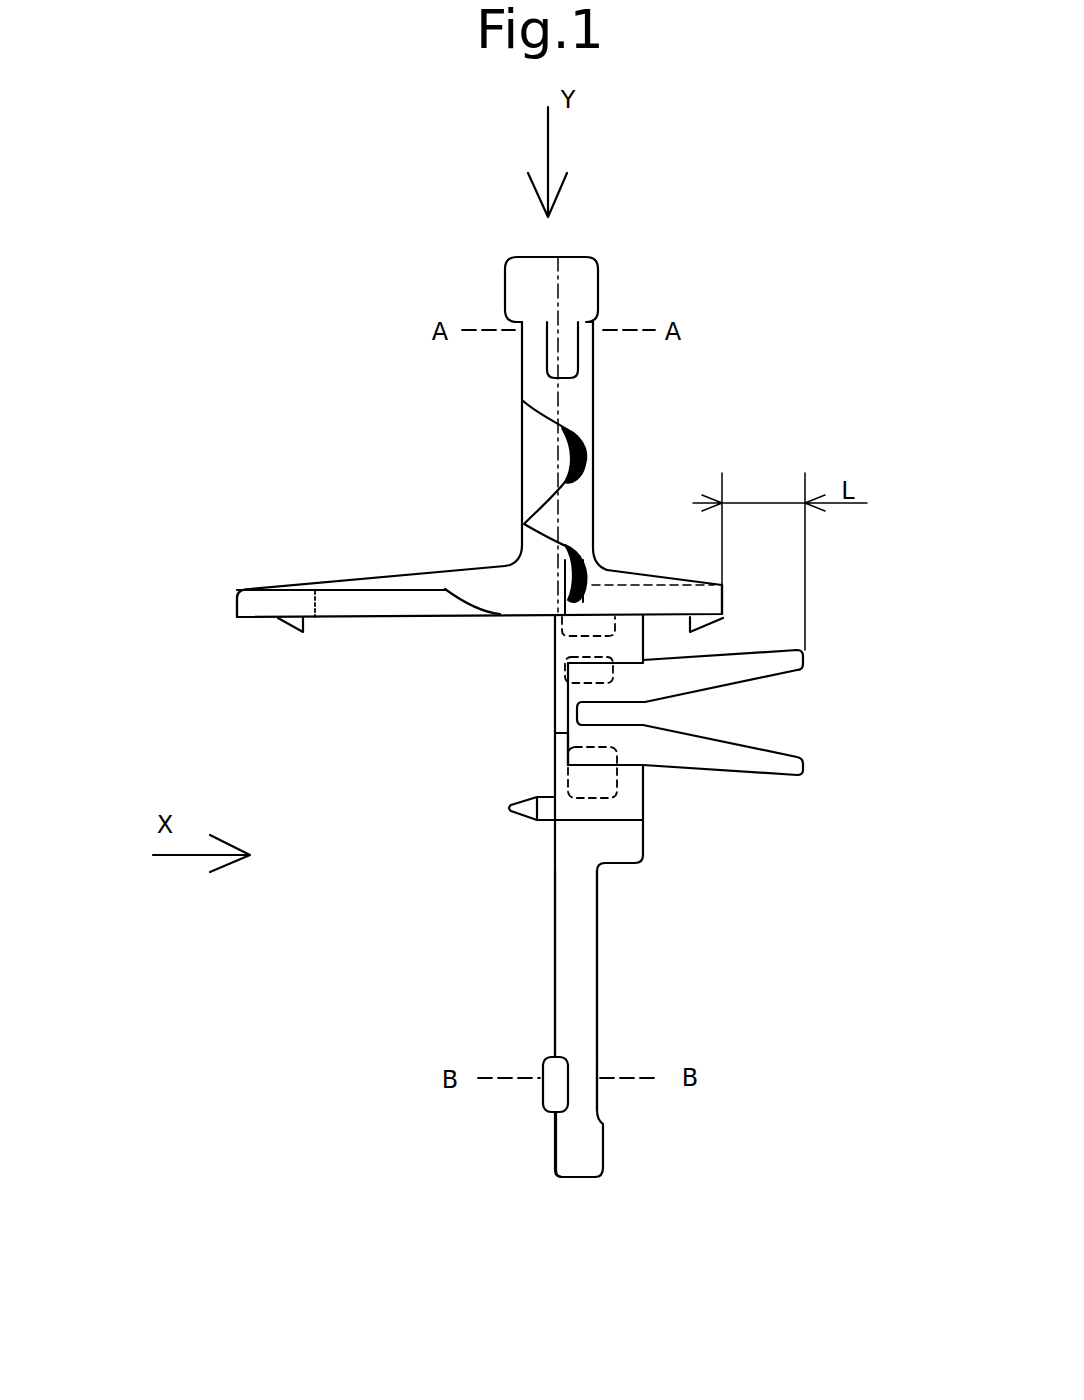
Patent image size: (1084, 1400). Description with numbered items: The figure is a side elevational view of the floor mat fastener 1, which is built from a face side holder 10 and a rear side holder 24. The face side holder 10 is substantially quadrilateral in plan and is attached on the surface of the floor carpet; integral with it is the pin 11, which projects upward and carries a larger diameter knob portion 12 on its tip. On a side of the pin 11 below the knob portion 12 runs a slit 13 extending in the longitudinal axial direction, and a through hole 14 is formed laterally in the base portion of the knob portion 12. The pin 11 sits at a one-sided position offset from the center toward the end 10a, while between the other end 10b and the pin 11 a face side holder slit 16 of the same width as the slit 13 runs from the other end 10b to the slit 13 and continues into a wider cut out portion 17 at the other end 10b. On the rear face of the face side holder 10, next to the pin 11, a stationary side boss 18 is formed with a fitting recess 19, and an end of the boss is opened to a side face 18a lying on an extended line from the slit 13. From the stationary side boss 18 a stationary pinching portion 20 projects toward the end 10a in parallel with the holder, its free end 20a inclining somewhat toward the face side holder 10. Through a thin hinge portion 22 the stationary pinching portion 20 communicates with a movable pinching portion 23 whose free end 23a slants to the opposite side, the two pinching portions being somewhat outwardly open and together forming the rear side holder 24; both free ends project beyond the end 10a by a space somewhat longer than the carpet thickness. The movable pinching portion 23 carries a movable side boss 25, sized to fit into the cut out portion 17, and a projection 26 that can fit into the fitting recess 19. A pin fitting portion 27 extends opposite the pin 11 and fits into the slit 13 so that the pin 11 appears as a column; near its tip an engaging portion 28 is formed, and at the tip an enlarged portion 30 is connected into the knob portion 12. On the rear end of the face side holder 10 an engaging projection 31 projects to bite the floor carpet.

The fastener 1 is at (387, 367).
The face side holder 10 is at (370, 592).
The end 10a is at (730, 593).
The other end 10b is at (240, 605).
The pin 11 is at (580, 400).
The knob portion 12 is at (582, 278).
The slit 13 is at (545, 448).
The through hole 14 is at (563, 360).
The face side holder slit 16 is at (510, 588).
The cut out portion 17 is at (330, 622).
The stationary side boss 18 is at (562, 683).
The side face 18a is at (587, 643).
The fitting recess 19 is at (565, 625).
The stationary pinching portion 20 is at (736, 744).
The free end 20a is at (805, 660).
The thin hinge portion 22 is at (572, 712).
The movable pinching portion 23 is at (737, 751).
The free end 23a is at (805, 775).
The rear side holder 24 is at (737, 769).
The movable side boss 25 is at (567, 780).
The projection 26 is at (525, 810).
The pin fitting portion 27 is at (570, 960).
The engaging portion 28 is at (552, 1095).
The enlarged portion 30 is at (580, 1158).
The engaging projection 31 is at (290, 632).